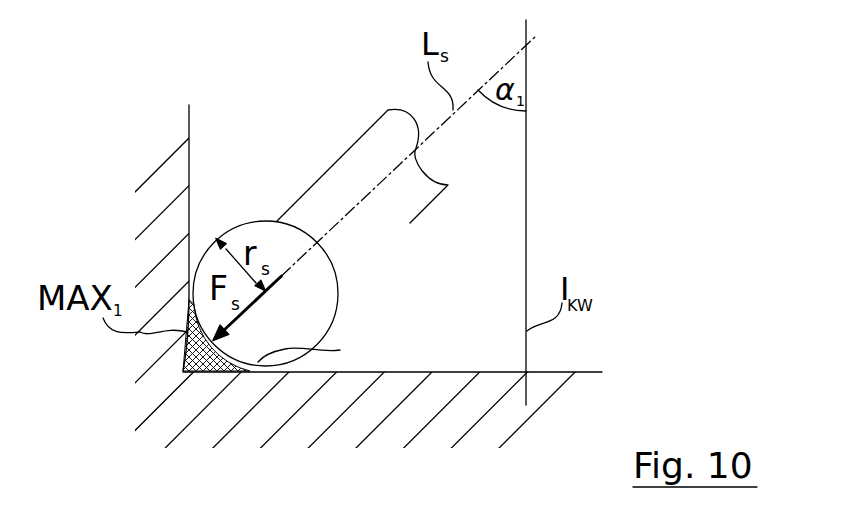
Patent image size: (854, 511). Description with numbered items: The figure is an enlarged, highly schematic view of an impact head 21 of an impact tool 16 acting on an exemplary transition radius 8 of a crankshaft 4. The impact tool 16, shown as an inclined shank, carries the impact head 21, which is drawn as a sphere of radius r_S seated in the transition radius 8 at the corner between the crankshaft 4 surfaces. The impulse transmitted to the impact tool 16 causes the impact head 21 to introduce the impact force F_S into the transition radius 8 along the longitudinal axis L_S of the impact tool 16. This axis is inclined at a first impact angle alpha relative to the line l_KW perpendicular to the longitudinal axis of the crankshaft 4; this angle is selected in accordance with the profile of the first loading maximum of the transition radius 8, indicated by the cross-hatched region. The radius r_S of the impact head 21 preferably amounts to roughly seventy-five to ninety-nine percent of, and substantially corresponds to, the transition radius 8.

The crankshaft 4 is at (436, 388).
The transition radius 8 is at (340, 350).
The impact tool 16 is at (336, 122).
The impact head 21 is at (262, 220).